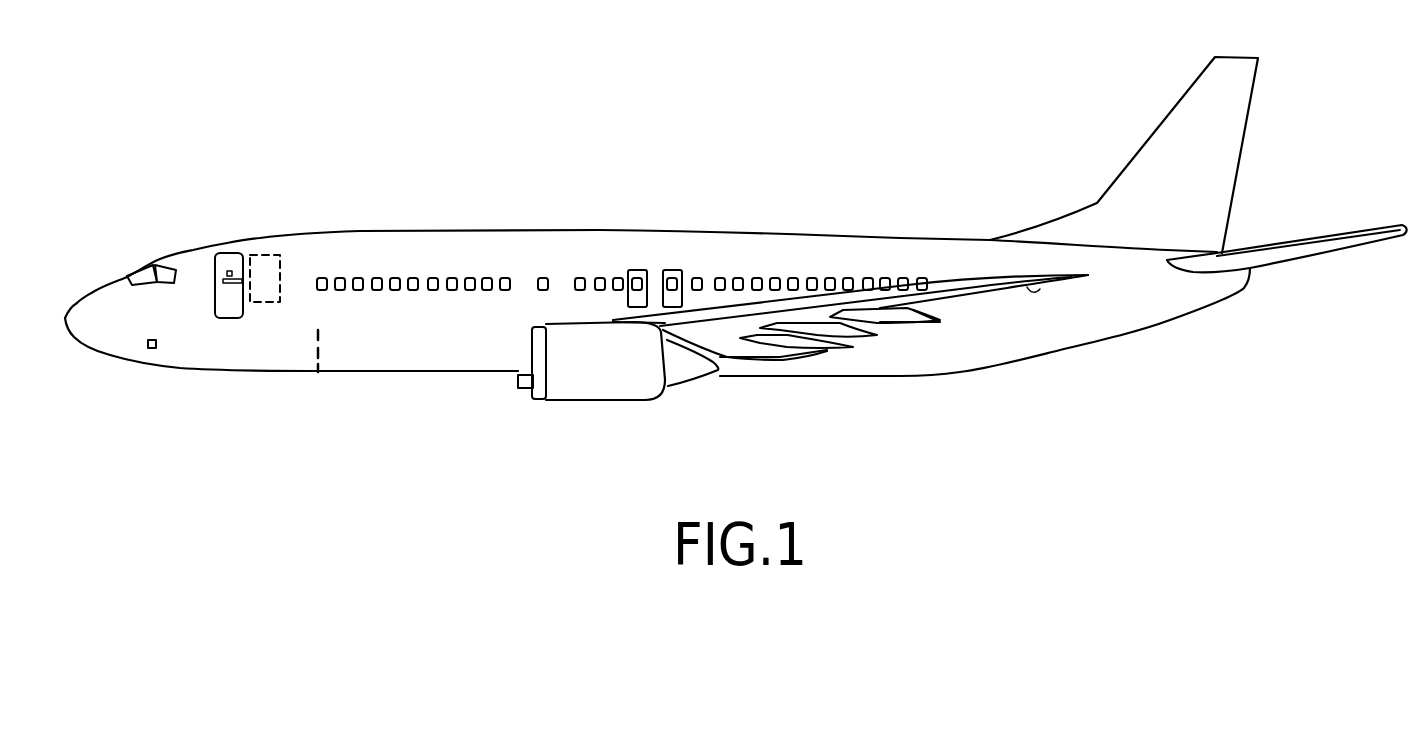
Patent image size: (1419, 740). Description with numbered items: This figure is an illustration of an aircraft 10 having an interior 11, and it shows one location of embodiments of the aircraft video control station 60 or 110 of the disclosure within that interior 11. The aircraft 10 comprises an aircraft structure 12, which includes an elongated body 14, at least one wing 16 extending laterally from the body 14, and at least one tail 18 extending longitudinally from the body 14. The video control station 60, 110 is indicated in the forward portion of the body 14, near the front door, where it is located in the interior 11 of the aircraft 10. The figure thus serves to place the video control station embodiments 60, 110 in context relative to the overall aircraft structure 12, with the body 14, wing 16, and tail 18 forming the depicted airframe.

The aircraft 10 is at (828, 162).
The interior 11 is at (314, 376).
The aircraft structure 12 is at (862, 240).
The elongated body 14 is at (423, 357).
The wing 16 is at (988, 287).
The tail 18 is at (1232, 138).
The aircraft video control station 60 is at (267, 229).
The aircraft video control station 110 is at (265, 262).